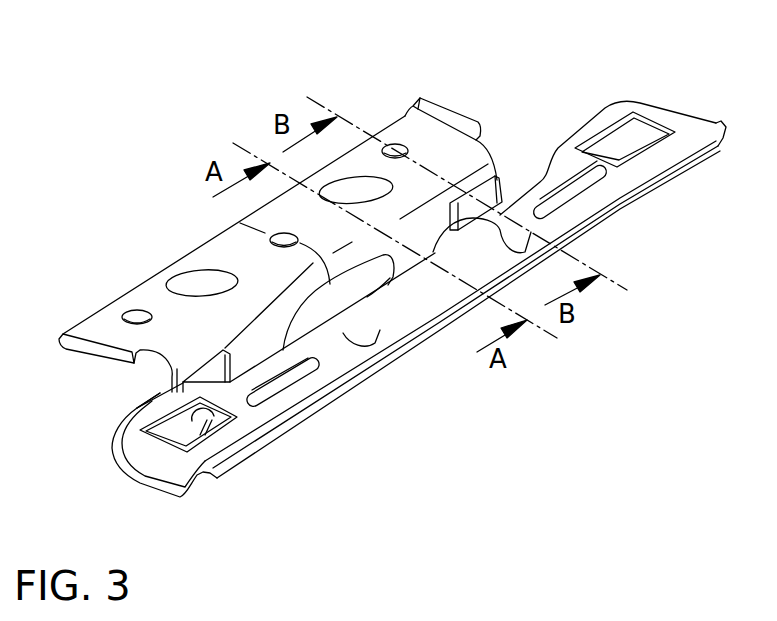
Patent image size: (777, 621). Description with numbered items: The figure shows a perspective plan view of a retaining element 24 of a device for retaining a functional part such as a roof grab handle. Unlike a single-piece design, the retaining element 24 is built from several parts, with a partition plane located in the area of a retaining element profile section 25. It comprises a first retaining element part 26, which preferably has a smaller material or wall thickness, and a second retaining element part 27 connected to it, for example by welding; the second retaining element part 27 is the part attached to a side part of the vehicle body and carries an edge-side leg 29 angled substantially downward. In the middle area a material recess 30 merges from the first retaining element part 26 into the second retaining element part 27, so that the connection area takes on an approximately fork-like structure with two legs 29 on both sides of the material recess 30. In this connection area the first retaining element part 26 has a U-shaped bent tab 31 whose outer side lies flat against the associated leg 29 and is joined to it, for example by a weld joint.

The retaining element 24 is at (510, 120).
The retaining element profile section 25 is at (134, 400).
The first retaining element part 26 is at (383, 333).
The second retaining element part 27 is at (148, 298).
The leg 29 is at (425, 242).
The material recess 30 is at (328, 303).
The bent tab 31 is at (493, 192).